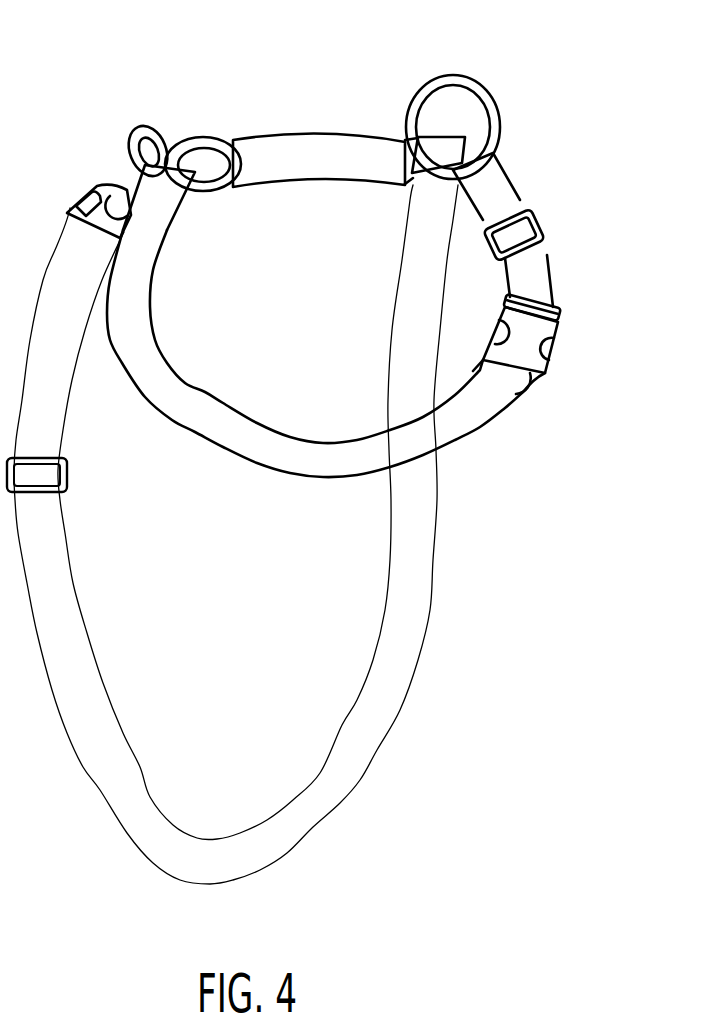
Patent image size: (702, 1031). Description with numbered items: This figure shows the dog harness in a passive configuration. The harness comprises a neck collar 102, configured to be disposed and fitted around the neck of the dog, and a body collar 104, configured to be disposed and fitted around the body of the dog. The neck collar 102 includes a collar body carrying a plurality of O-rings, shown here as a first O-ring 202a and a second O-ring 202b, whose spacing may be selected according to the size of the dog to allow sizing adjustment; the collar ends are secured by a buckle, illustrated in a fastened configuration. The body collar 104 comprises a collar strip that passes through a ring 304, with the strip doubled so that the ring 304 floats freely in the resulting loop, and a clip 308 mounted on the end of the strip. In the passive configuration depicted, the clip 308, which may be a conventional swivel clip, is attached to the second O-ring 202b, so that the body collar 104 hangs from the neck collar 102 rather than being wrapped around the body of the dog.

The neck collar 102 is at (267, 430).
The body collar 104 is at (437, 565).
The first O-ring 202a is at (208, 138).
The second O-ring 202b is at (420, 185).
The ring 304 is at (477, 77).
The clip 308 is at (127, 140).